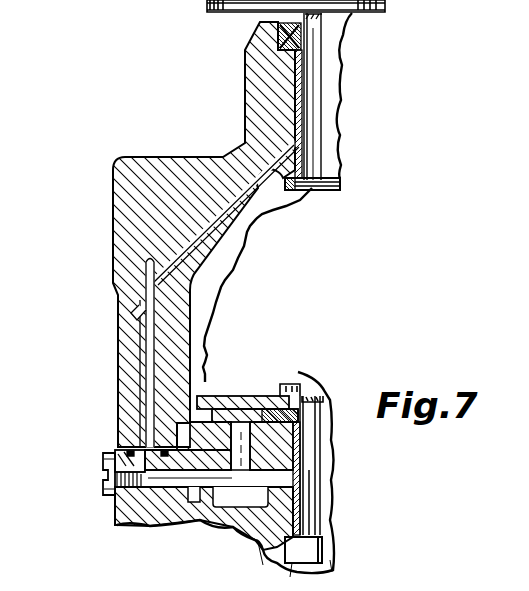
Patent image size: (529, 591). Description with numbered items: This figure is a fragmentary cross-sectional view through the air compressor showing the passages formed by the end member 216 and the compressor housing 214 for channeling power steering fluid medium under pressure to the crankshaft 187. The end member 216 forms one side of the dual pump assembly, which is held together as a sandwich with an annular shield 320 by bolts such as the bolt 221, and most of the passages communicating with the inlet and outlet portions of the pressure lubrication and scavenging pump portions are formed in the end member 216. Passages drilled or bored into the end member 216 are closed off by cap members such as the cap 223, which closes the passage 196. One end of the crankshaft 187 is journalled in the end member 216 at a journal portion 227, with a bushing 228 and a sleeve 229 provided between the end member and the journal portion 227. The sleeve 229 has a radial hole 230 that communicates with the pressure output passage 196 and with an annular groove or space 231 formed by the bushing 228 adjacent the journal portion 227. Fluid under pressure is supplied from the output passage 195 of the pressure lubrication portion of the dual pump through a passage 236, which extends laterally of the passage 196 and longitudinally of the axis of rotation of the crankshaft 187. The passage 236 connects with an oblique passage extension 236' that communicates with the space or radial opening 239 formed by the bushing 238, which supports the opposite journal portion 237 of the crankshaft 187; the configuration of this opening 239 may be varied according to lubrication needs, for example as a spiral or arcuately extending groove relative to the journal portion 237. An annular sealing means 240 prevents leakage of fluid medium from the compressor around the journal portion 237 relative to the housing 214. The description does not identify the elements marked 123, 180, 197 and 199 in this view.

The mounting plate 123 is at (385, 12).
The annular sealing means 240 is at (278, 31).
The fluid passage 239 is at (300, 112).
The journal portion 237 is at (333, 138).
The bushing 238 is at (300, 160).
The crankshaft 187 is at (303, 190).
The oblique passage extension 236' is at (226, 202).
The compressor housing 214 is at (112, 222).
The passage 236 is at (115, 353).
The plate 180 is at (225, 420).
The annular shield 320 is at (258, 396).
The bushing 228 is at (303, 400).
The radial hole 230 is at (293, 467).
The annular groove 231 is at (300, 477).
The output passage 195 is at (241, 463).
The pressure output passage 196 is at (177, 473).
The sleeve 229 is at (285, 507).
The journal portion 227 is at (322, 515).
The end member 216 is at (125, 492).
The cap 223 is at (102, 493).
The bolt 221 is at (259, 566).
The passage 197 is at (304, 577).
The passage 199 is at (368, 575).